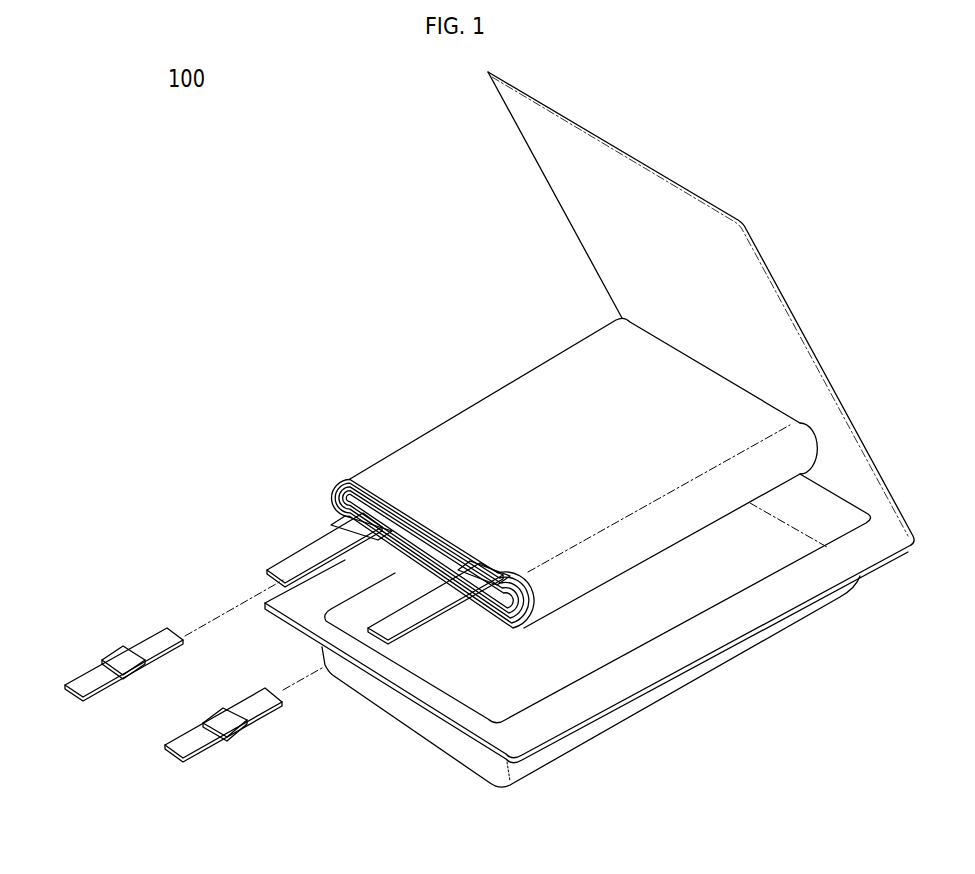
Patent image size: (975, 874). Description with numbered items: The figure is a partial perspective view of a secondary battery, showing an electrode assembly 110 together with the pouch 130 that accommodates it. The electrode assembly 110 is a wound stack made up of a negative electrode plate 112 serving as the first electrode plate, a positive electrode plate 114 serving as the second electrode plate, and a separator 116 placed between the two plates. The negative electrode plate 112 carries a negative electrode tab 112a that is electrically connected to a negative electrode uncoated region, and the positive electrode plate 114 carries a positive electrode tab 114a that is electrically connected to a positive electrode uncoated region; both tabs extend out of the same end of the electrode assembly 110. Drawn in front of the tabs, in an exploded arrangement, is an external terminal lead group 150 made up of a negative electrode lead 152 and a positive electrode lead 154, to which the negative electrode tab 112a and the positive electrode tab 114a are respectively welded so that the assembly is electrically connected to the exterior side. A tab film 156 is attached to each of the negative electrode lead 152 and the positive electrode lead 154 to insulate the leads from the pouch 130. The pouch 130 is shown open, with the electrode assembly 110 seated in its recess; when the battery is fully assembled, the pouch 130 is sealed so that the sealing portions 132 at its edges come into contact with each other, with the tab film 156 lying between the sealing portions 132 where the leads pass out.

The electrode assembly 110 is at (440, 422).
The negative electrode plate 112 is at (328, 506).
The negative electrode tab 112a is at (289, 551).
The positive electrode plate 114 is at (340, 476).
The positive electrode tab 114a is at (397, 628).
The separator 116 is at (329, 487).
The pouch 130 is at (465, 775).
The sealing portions 132 is at (682, 647).
The electrode lead assembly 150 is at (125, 807).
The negative electrode lead 152 is at (65, 693).
The positive electrode lead 154 is at (170, 752).
The tab film 156 is at (203, 718).